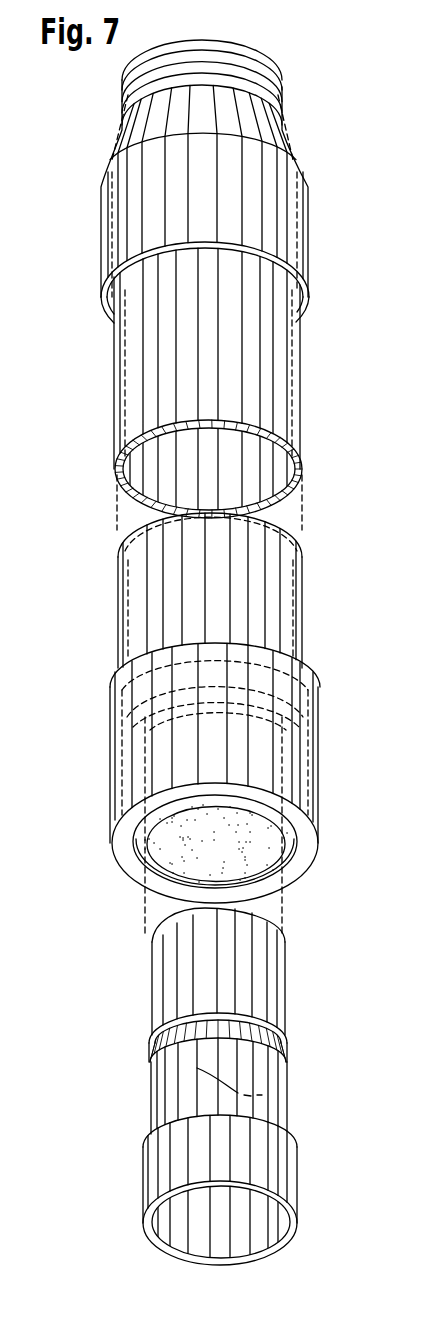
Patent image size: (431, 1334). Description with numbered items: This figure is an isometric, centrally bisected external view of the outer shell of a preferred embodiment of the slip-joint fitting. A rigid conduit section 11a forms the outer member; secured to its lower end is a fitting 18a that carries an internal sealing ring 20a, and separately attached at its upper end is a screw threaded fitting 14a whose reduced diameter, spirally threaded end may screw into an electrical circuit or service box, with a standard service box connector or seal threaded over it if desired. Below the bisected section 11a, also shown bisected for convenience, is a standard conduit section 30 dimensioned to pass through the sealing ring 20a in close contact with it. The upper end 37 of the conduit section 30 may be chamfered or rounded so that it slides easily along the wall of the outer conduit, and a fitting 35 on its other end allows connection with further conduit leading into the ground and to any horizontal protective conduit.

The screw threaded fitting 14a is at (309, 192).
The rigid conduit section 11a is at (132, 373).
The fitting 18a is at (318, 753).
The internal sealing ring 20a is at (145, 856).
The upper end 37 is at (158, 922).
The standard conduit section 30 is at (158, 980).
The fitting 35 is at (160, 1172).